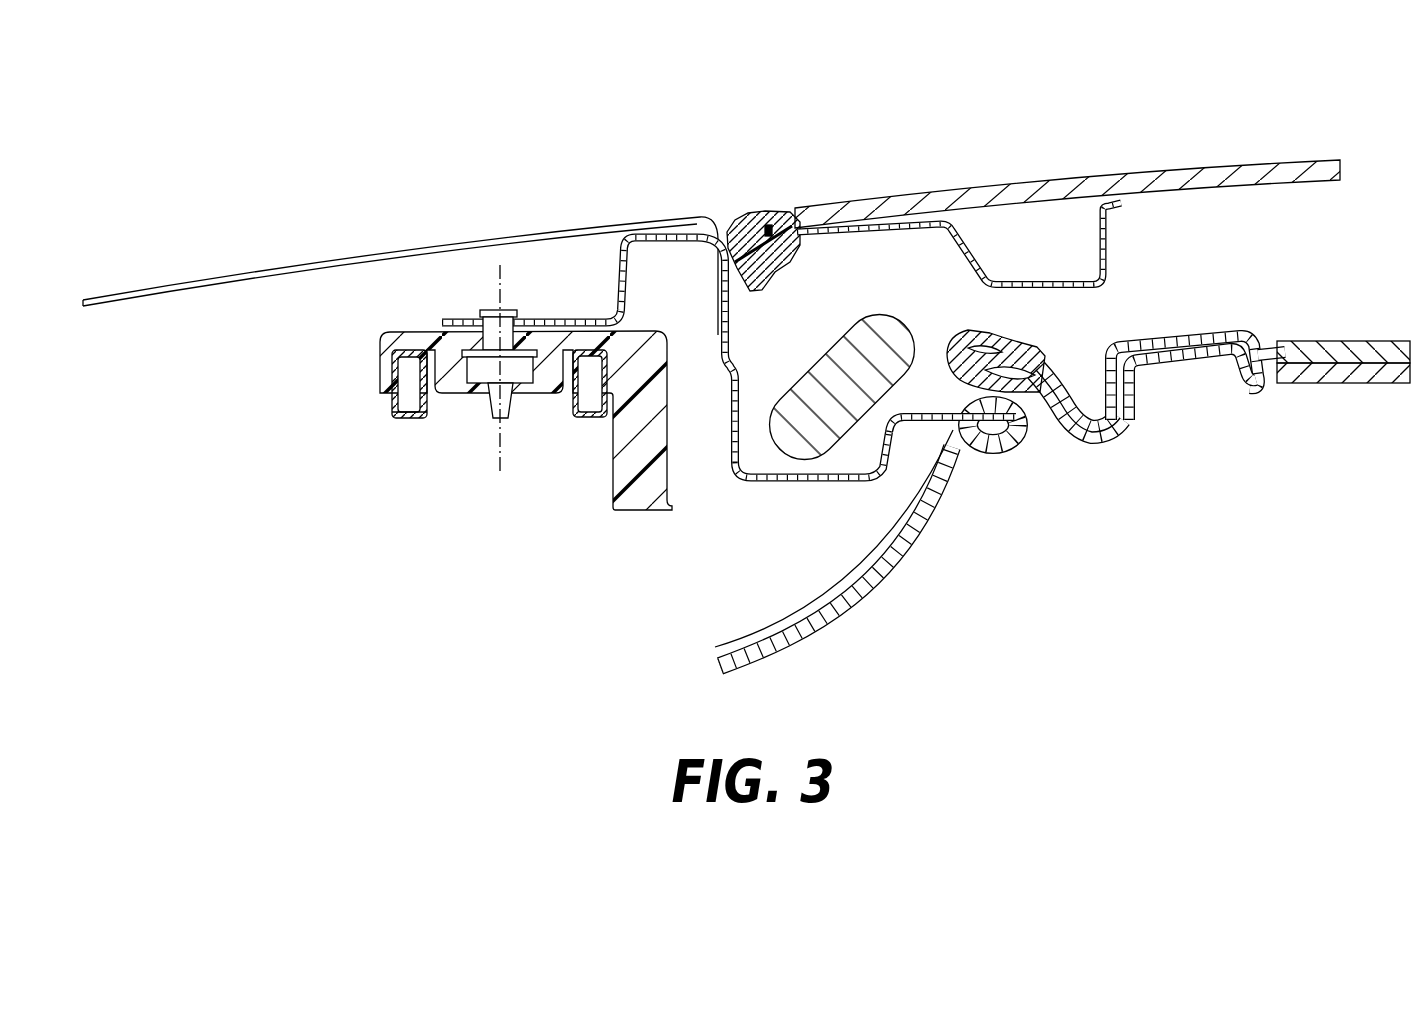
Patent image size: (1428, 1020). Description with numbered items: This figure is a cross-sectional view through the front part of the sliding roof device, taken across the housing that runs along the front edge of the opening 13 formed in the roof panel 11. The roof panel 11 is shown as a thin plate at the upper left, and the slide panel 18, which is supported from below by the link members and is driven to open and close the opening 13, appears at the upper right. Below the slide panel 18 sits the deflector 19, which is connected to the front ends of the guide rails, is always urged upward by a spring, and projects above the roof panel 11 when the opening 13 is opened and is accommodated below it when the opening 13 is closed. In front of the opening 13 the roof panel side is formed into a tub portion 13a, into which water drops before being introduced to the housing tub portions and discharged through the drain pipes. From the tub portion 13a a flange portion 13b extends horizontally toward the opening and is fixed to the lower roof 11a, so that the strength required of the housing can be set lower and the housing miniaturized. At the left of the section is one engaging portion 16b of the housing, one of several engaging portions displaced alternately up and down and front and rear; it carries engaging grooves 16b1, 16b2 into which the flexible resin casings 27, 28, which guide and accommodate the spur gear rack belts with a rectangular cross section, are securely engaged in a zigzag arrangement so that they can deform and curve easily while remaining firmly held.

The roof panel 11 is at (277, 263).
The lower roof 11a is at (863, 582).
The opening 13 is at (724, 220).
The tub portion 13a is at (800, 485).
The flange portion 13b is at (936, 412).
The engaging portion 16b is at (647, 433).
The engaging groove 16b1 is at (577, 375).
The engaging groove 16b2 is at (403, 357).
The slide panel 18 is at (1152, 170).
The deflector 19 is at (858, 315).
The casing 27 is at (590, 417).
The casing 28 is at (410, 418).